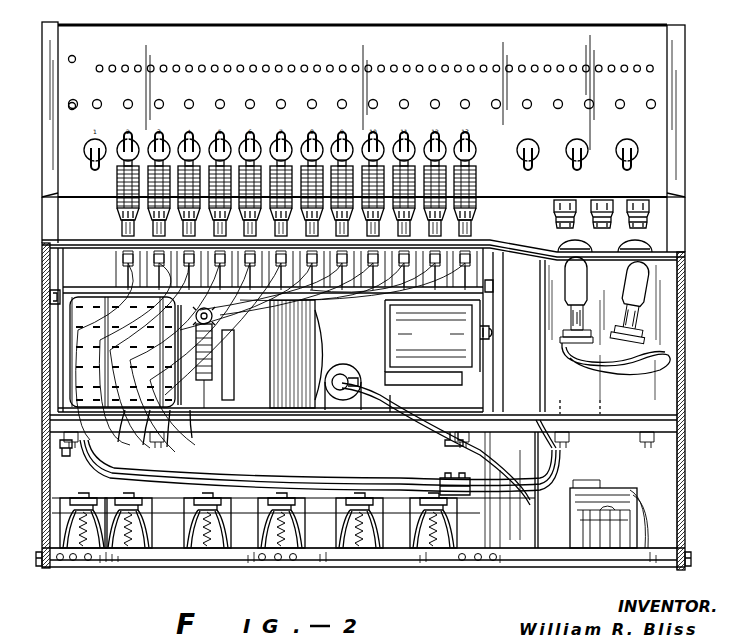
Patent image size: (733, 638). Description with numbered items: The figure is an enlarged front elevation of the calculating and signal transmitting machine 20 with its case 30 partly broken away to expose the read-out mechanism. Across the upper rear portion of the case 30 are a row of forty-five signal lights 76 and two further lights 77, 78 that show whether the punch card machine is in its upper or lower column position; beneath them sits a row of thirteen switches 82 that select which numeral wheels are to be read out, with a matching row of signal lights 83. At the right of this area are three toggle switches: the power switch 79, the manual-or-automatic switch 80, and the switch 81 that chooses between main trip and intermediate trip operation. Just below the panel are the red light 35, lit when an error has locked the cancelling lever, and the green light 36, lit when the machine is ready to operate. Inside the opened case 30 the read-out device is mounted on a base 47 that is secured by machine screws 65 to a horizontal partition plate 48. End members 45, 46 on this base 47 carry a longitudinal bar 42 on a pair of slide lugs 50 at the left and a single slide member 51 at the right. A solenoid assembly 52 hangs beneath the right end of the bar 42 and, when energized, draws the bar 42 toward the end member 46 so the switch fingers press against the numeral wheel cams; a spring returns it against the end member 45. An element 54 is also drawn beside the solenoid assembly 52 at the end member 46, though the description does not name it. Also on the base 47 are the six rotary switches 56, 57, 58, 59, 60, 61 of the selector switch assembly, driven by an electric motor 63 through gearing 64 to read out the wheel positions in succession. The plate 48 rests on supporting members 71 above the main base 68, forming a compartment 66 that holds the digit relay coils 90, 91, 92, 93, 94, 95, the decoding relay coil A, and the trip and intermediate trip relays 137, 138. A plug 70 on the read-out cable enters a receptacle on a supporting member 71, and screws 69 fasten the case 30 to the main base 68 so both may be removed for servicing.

The calculating and signal transmitting machine 20 is at (720, 244).
The case 30 is at (680, 362).
The red signal light 35 is at (572, 270).
The green signal light 36 is at (640, 280).
The longitudinal base or bar 42 is at (344, 294).
The end member 45 is at (62, 355).
The end member 46 is at (497, 380).
The base 47 is at (383, 415).
The horizontal plate or partition member 48 is at (328, 425).
The slide members or lugs 50 is at (50, 297).
The slide member 51 is at (490, 283).
The solenoid assembly 52 is at (439, 340).
The adjusting knob 54 is at (492, 330).
The rotary switch 56 is at (78, 300).
The rotary switch 57 is at (94, 300).
The rotary switch 58 is at (122, 434).
The rotary switch 59 is at (146, 435).
The rotary switch 60 is at (170, 436).
The rotary switch 61 is at (196, 432).
The electric motor 63 is at (261, 354).
The gearing 64 is at (214, 318).
The machine screws 65 is at (98, 448).
The compartment 66 is at (299, 467).
The main base 68 is at (370, 560).
The screws 69 is at (40, 552).
The plug 70 is at (545, 455).
The supporting member 71 is at (538, 526).
The signal lights 76 is at (656, 59).
The upper signal light 77 is at (68, 59).
The lower signal light 78 is at (68, 106).
The toggle switch 79 is at (624, 148).
The toggle switch 80 is at (574, 148).
The toggle switch 81 is at (524, 145).
The switches 82 is at (84, 175).
The signal lights 83 is at (497, 109).
The decoding relay operating coil A is at (78, 540).
The relay coil 90 is at (134, 540).
The relay coil 91 is at (214, 540).
The relay coil 92 is at (292, 540).
The relay coil 93 is at (366, 540).
The relay coil 94 is at (448, 540).
The relay coil 95 is at (605, 535).
The trip relay 137 is at (440, 480).
The intermediate trip relay 138 is at (504, 530).